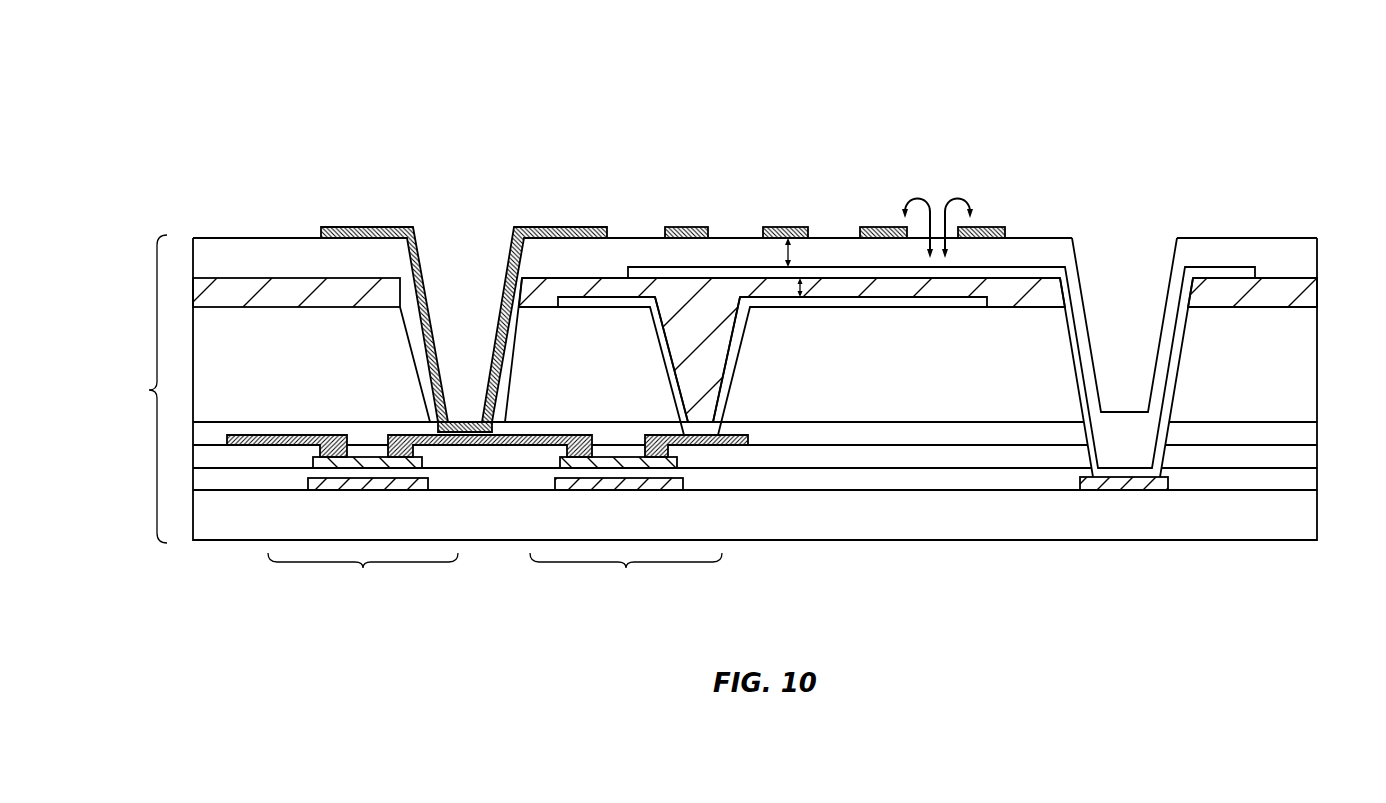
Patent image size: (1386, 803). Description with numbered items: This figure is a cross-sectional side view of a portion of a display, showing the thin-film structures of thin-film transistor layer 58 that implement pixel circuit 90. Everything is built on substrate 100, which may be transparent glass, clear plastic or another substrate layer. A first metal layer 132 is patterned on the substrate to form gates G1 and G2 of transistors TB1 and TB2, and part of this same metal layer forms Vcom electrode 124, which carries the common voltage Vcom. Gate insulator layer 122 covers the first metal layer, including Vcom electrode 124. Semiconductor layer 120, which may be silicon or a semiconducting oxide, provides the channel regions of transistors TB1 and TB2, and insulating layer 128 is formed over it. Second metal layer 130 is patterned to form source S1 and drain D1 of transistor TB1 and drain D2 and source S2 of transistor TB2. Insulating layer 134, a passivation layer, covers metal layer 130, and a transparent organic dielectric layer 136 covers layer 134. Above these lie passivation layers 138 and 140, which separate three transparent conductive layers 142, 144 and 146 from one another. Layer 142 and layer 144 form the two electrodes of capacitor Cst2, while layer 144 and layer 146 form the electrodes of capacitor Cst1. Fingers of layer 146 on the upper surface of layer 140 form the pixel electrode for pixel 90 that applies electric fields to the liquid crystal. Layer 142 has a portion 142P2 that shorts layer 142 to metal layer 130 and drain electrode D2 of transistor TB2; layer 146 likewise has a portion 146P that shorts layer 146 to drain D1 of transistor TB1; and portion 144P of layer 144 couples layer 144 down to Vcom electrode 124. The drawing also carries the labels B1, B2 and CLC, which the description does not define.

The pixel circuit 90 is at (402, 96).
The substrate 100 is at (1020, 542).
The thin-film transistor layer 58 is at (144, 389).
The passivation layer 140 is at (1308, 258).
The transparent conductive layer 144 is at (677, 267).
The portion of layer 144 144P is at (1085, 471).
The passivation layer 138 is at (1308, 288).
The dielectric layer 136 is at (1308, 353).
The transparent conductive layer 142 is at (773, 300).
The portion of layer 142 142P2 is at (733, 390).
The insulating layer 134 is at (1308, 429).
The insulating layer 128 is at (1308, 455).
The gate insulator layer 122 is at (1308, 478).
The transparent conductive layer 146 is at (595, 227).
The portion of layer 146 146P is at (438, 400).
The first bias electrode B1 is at (463, 421).
The second bias electrode B2 is at (1027, 276).
The second metal layer 130 is at (256, 434).
The source S1 is at (328, 435).
The drain D1 is at (400, 435).
The source S2 is at (575, 435).
The drain D2 is at (655, 435).
The semiconductor layer 120 is at (559, 462).
The first metal layer 132 is at (388, 486).
The gate G1 is at (416, 486).
The gate G2 is at (670, 487).
The Vcom electrode 124 is at (1101, 484).
The Vcom electrode Vcom is at (1145, 484).
The transistor TB1 is at (363, 573).
The transistor TB2 is at (626, 573).
The capacitor Cst1 is at (807, 252).
The capacitor Cst2 is at (804, 290).
The liquid crystal capacitance CLC is at (937, 209).